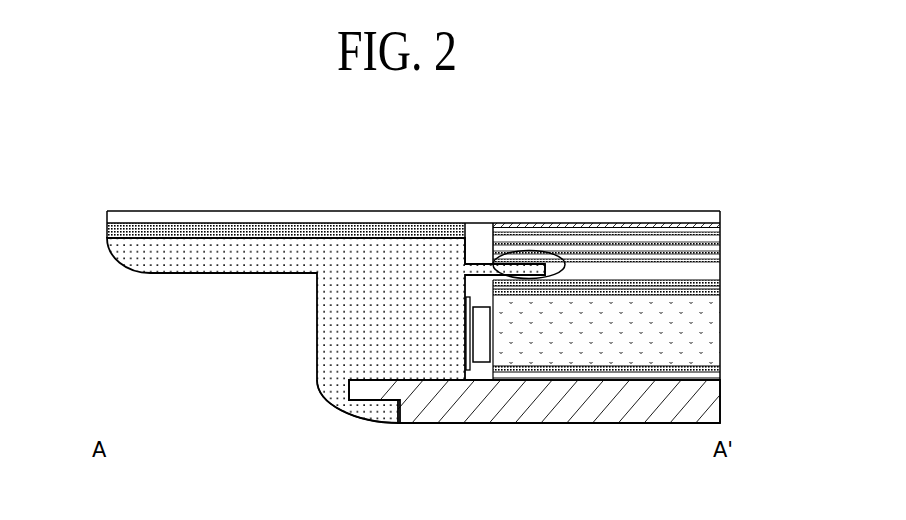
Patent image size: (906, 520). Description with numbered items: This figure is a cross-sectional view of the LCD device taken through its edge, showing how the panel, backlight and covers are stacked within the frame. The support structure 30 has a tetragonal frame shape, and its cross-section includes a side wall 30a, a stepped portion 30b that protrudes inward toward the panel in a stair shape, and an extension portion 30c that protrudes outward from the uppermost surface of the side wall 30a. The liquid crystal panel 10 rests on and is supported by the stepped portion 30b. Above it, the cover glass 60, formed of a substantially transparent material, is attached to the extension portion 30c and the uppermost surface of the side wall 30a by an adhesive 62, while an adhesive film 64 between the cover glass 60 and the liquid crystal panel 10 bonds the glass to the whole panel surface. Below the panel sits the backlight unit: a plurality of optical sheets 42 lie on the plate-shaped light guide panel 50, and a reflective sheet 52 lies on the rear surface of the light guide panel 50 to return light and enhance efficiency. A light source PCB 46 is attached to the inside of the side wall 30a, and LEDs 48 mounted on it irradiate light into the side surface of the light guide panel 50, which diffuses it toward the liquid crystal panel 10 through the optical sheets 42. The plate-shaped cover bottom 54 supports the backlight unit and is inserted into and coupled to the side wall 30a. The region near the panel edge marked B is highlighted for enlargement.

The liquid crystal panel 10 is at (710, 240).
The support structure 30 is at (326, 323).
The side wall 30a is at (330, 358).
The stepped portion 30b is at (487, 272).
The extension portion 30c is at (240, 252).
The plurality of optical sheets 42 is at (724, 280).
The light source printed circuit board 46 is at (472, 367).
The LEDs 48 is at (482, 347).
The light guide panel 50 is at (712, 322).
The reflective sheet 52 is at (712, 376).
The cover bottom 54 is at (712, 402).
The cover glass 60 is at (113, 217).
The adhesive 62 is at (110, 227).
The adhesive film 64 is at (720, 226).
The enlarged region B is at (526, 250).